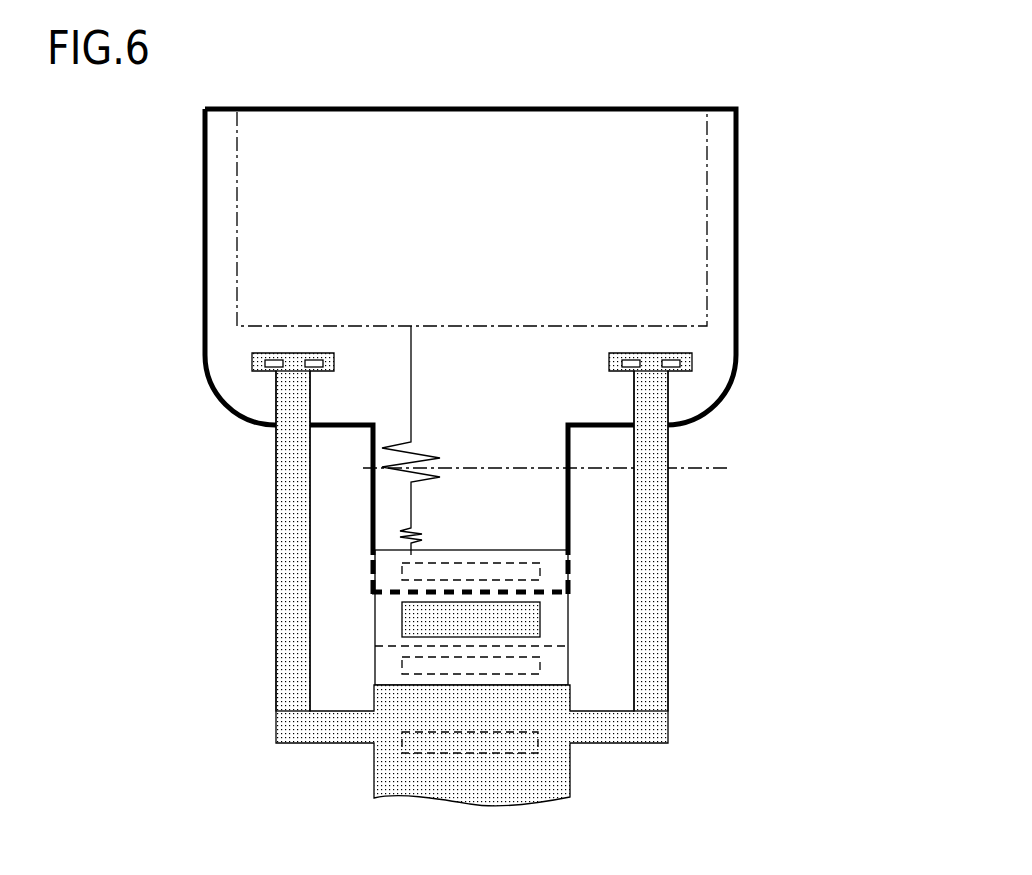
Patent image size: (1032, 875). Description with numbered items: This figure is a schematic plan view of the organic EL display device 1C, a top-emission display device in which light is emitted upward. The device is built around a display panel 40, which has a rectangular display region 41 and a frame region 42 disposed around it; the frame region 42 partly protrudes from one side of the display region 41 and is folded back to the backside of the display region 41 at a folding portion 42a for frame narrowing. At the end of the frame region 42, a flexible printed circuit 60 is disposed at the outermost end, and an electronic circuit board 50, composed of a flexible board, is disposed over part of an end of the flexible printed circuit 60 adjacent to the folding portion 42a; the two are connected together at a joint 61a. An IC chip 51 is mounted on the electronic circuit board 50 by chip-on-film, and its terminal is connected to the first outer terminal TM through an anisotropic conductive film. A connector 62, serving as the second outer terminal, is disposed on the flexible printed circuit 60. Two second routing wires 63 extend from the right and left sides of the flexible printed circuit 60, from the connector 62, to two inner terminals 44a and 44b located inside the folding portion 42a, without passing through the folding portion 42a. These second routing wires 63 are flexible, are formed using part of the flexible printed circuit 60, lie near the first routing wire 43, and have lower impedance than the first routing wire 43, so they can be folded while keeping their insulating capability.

The organic EL display device 1C is at (770, 97).
The display panel 40 is at (742, 147).
The display region 41 is at (707, 218).
The frame region 42 is at (547, 524).
The folding portion 42a is at (690, 468).
The first routing wire 43 is at (413, 434).
The inner terminal 44a is at (250, 353).
The inner terminal 44b is at (692, 367).
The electronic circuit board 50 is at (367, 550).
The IC chip 51 is at (520, 620).
The flexible printed circuit 60 is at (575, 647).
The joint 61a is at (553, 660).
The connector 62 is at (505, 742).
The second routing wire 63 is at (290, 552).
The first outer terminal TM is at (540, 571).